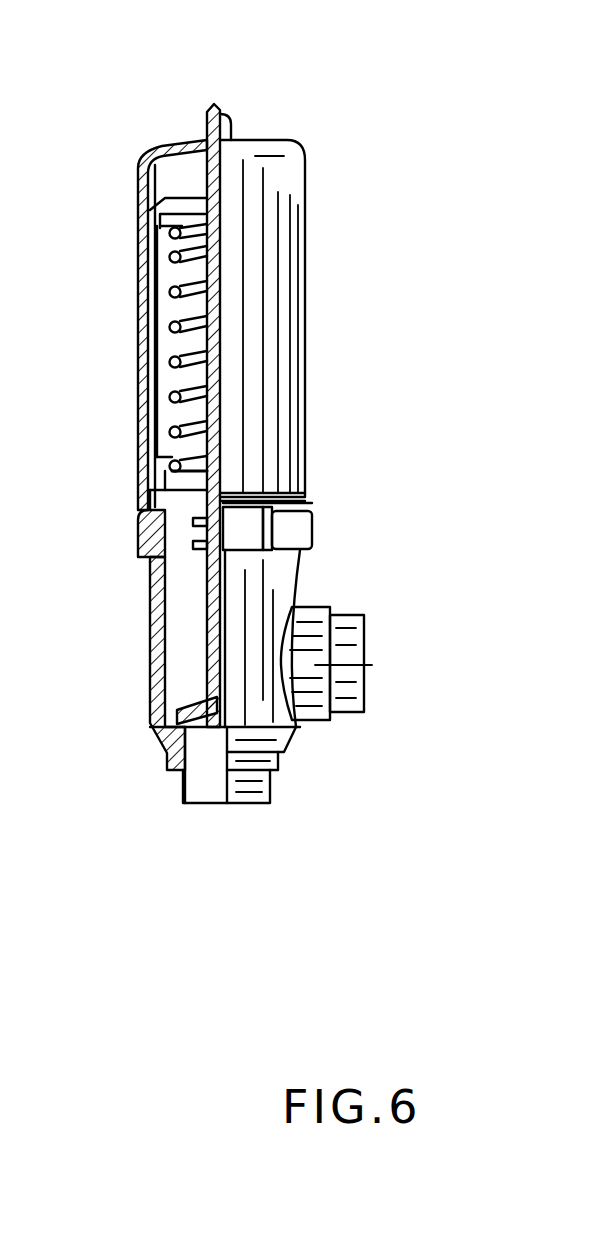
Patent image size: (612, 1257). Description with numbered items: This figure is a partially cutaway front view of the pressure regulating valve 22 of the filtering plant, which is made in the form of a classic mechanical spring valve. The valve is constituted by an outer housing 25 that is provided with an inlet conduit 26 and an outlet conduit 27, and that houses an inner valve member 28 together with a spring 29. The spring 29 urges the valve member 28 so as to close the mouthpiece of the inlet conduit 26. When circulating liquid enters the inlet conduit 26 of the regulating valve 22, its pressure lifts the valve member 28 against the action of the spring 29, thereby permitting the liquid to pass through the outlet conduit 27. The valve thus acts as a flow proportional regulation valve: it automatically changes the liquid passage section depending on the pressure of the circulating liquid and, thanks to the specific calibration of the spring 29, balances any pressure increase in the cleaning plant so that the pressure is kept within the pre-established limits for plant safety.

The pressure regulating valve 22 is at (267, 461).
The outer housing 25 is at (282, 373).
The inlet conduit 26 is at (250, 805).
The outlet conduit 27 is at (365, 680).
The inner valve member 28 is at (210, 630).
The spring 29 is at (170, 375).